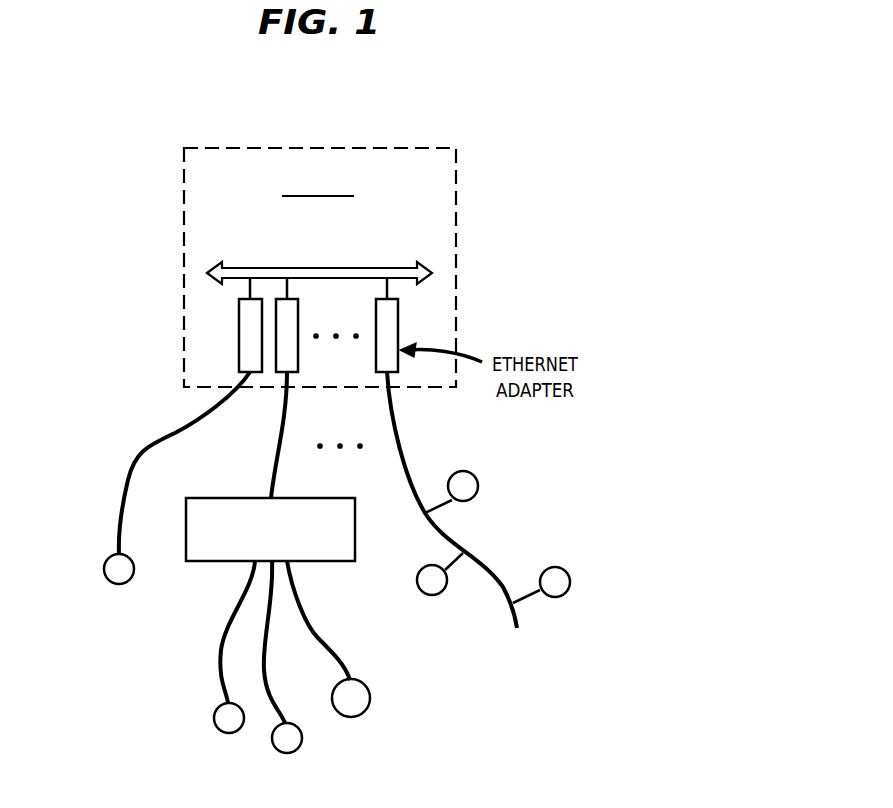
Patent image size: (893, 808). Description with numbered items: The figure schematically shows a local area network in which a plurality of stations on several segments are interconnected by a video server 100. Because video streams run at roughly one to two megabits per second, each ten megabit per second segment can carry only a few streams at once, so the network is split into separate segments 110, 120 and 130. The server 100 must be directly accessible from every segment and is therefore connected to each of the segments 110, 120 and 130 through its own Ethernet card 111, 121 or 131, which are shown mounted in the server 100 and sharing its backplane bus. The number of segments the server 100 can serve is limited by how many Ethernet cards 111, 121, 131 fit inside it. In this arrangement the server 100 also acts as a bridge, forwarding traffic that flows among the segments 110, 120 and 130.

The server 100 is at (388, 148).
The Ethernet card 111 is at (239, 318).
The Ethernet card 121 is at (298, 313).
The Ethernet card 131 is at (398, 323).
The segment 110 is at (124, 436).
The segment 120 is at (242, 743).
The segment 130 is at (520, 517).